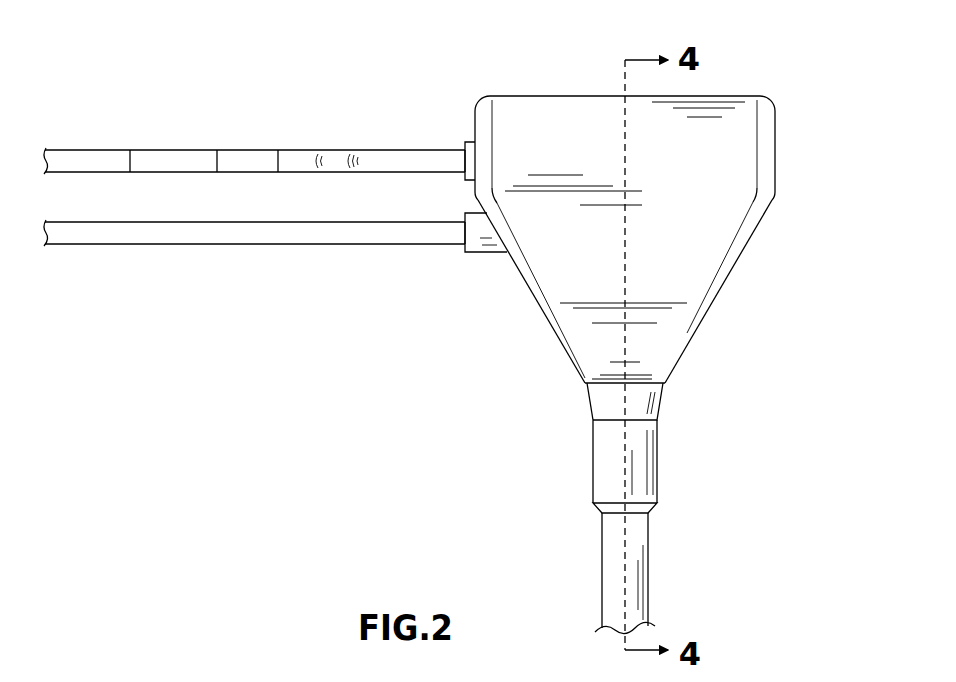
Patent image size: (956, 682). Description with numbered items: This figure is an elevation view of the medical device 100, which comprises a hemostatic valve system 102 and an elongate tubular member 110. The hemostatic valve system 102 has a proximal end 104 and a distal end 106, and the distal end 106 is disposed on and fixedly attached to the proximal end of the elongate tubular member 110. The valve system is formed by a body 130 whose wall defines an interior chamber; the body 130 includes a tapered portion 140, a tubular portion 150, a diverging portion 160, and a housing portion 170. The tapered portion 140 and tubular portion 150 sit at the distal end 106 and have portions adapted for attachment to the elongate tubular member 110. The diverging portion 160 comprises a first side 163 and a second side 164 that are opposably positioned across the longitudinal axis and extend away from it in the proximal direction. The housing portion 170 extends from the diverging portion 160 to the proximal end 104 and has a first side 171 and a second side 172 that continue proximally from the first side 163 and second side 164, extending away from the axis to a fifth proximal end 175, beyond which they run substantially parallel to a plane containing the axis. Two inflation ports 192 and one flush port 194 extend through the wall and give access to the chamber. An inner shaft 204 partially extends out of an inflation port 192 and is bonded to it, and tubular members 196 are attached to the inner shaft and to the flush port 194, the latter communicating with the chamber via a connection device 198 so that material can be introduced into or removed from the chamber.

The medical device 100 is at (450, 57).
The hemostatic valve system 102 is at (775, 394).
The proximal end 104 is at (784, 77).
The distal end 106 is at (565, 545).
The elongate tubular member 110 is at (649, 566).
The body 130 is at (556, 95).
The tapered portion 140 is at (651, 509).
The tubular portion 150 is at (659, 458).
The diverging portion 160 is at (666, 400).
The first side 163 is at (588, 398).
The second side 164 is at (668, 386).
The housing portion 170 is at (693, 337).
The first side 171 is at (536, 300).
The second side 172 is at (734, 270).
The fifth proximal end 175 is at (778, 200).
The inflation ports 192 is at (466, 142).
The flush port 194 is at (507, 255).
The tubular members 196 is at (90, 150).
The connection device 198 is at (465, 249).
The inner shaft 204 is at (466, 181).